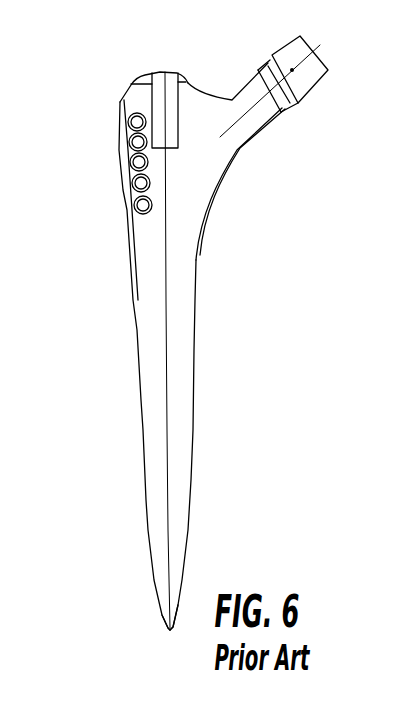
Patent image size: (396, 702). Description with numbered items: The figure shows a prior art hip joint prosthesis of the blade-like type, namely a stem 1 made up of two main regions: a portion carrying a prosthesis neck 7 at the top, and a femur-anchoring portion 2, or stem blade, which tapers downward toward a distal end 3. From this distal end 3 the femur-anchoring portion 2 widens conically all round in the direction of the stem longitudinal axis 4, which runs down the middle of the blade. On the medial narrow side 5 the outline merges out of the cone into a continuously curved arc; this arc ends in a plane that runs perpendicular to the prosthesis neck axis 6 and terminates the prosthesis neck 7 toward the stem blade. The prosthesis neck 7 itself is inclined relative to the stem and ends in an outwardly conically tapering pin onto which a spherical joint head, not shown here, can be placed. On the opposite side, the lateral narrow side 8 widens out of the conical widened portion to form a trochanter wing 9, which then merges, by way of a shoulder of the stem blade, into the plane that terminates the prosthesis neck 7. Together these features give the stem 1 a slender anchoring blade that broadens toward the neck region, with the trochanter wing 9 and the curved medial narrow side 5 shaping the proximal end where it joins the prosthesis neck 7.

The stem 1 is at (210, 329).
The femur-anchoring portion 2 is at (172, 230).
The distal end 3 is at (157, 577).
The stem longitudinal axis 4 is at (168, 397).
The medial narrow side 5 is at (195, 328).
The prosthesis neck axis 6 is at (313, 96).
The prosthesis neck 7 is at (246, 96).
The lateral narrow side 8 is at (138, 310).
The trochanter wing 9 is at (127, 174).